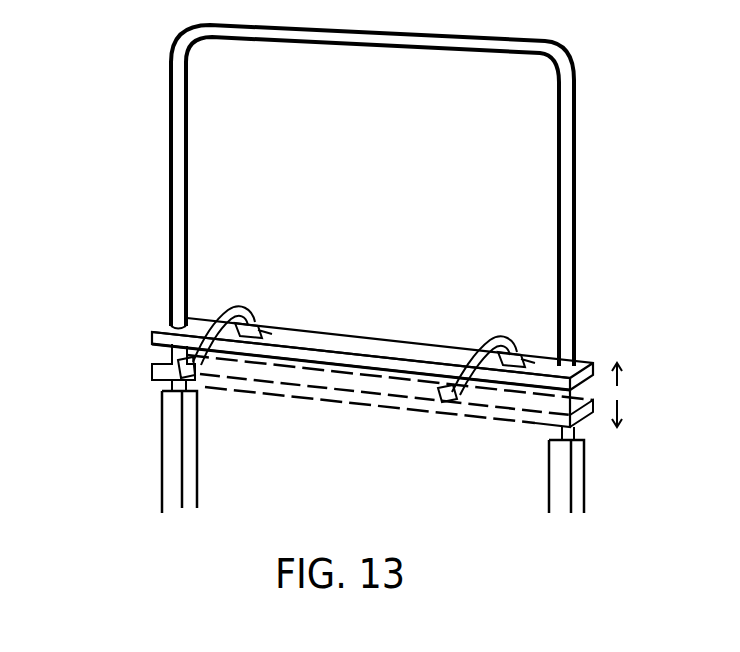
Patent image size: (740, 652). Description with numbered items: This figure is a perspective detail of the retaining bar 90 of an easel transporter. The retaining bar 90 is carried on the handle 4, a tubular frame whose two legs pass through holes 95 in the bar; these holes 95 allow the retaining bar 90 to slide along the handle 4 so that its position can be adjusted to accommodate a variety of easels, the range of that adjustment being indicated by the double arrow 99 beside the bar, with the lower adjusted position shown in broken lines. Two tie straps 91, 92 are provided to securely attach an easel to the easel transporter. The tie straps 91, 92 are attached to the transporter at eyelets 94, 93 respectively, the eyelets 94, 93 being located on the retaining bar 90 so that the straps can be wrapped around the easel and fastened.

The handle 4 is at (578, 247).
The retaining bar 90 is at (150, 333).
The tie strap 91 is at (155, 367).
The tie strap 92 is at (448, 397).
The eyelet 93 is at (523, 343).
The eyelet 94 is at (250, 320).
The holes 95 is at (169, 323).
The adjustment direction arrows 99 is at (594, 366).